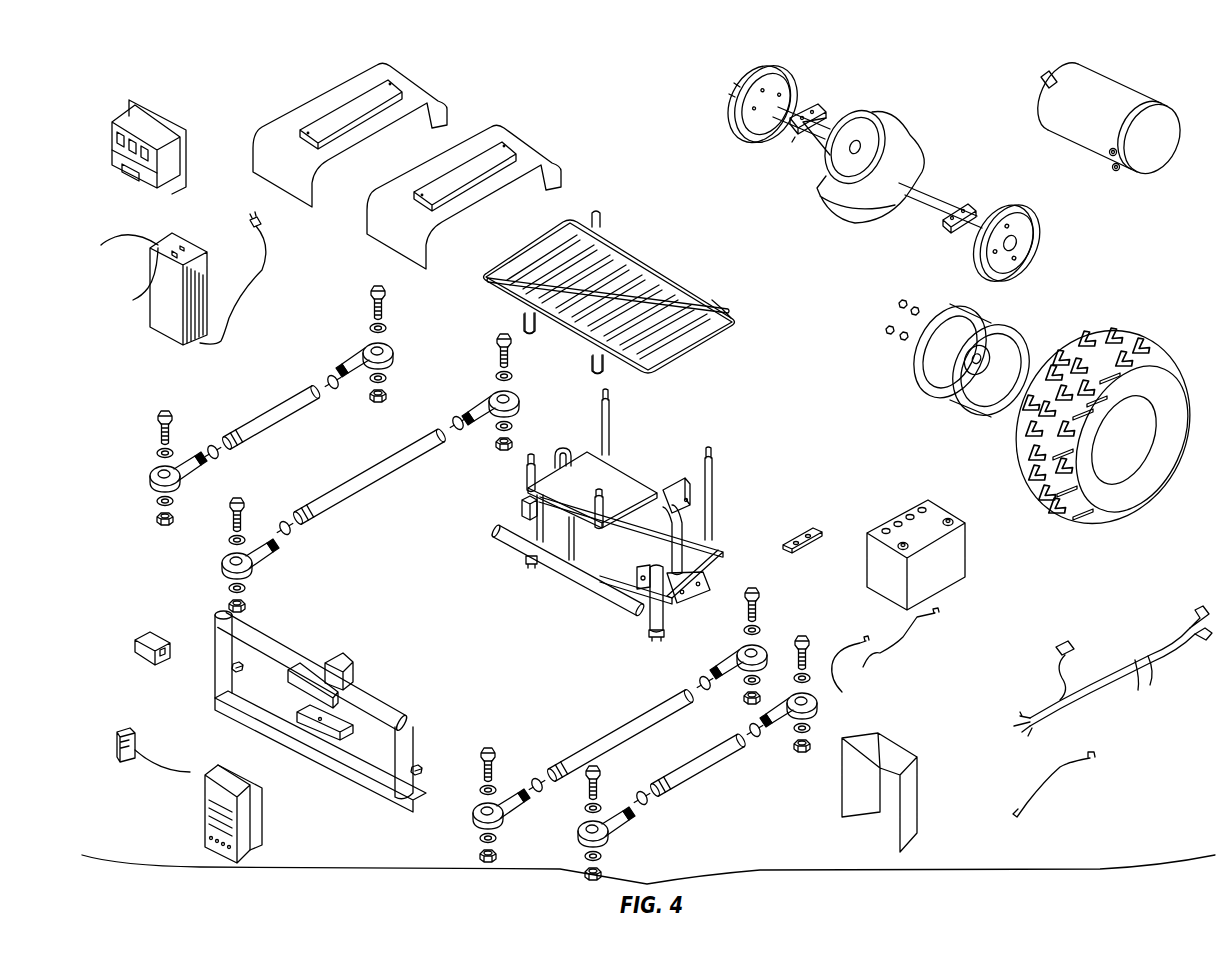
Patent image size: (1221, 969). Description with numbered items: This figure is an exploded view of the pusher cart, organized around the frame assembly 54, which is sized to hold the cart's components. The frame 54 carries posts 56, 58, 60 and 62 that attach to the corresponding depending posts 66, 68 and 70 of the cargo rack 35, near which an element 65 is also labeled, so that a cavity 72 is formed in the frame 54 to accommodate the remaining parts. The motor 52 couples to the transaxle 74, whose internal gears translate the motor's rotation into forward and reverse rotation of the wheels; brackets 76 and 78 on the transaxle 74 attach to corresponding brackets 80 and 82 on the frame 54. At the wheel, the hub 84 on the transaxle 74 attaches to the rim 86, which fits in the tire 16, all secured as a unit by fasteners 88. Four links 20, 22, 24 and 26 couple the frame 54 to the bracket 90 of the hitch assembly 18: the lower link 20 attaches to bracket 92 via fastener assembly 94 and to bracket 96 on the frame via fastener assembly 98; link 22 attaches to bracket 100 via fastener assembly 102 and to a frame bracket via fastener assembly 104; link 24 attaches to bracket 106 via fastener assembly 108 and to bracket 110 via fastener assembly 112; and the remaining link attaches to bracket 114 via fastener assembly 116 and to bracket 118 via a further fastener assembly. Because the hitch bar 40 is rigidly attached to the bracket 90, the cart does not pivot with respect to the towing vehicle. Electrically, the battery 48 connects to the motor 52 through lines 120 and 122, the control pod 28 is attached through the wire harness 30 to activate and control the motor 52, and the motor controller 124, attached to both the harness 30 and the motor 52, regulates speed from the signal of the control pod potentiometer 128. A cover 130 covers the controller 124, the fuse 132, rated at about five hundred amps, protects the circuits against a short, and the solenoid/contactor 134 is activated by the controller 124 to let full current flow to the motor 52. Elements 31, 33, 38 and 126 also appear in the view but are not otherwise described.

The tire 16 is at (1108, 324).
The hitch assembly 18 is at (367, 818).
The lower link 20 is at (360, 473).
The link 22 is at (277, 403).
The link 24 is at (702, 773).
The link 26 is at (635, 714).
The control pod 28 is at (152, 112).
The wire harness 30 is at (1122, 675).
The cover 31 is at (426, 93).
The cover 33 is at (524, 140).
The cargo rack 35 is at (608, 240).
The frame post 38 is at (213, 657).
The hitch bar 40 is at (302, 705).
The battery 48 is at (957, 585).
The motor 52 is at (1062, 150).
The frame assembly 54 is at (702, 408).
The post 56 is at (612, 432).
The post 58 is at (717, 469).
The post 60 is at (527, 467).
The post 62 is at (604, 517).
The cross bar 65 is at (608, 243).
The depending post 66 is at (712, 300).
The depending post 68 is at (529, 332).
The depending post 70 is at (592, 364).
The cavity 72 is at (690, 492).
The transaxle 74 is at (812, 152).
The bracket 76 is at (810, 105).
The bracket 78 is at (967, 196).
The bracket 80 is at (517, 512).
The bracket 82 is at (687, 603).
The hub 84 is at (1018, 207).
The rim 86 is at (983, 313).
The fasteners 88 is at (918, 290).
The bracket 90 is at (383, 708).
The bracket 92 is at (243, 662).
The fastener assembly 94 is at (212, 549).
The bracket 96 is at (527, 562).
The fastener assembly 98 is at (480, 383).
The bracket 100 is at (310, 655).
The fastener assembly 102 is at (142, 481).
The fastener assembly 104 is at (398, 311).
The bracket 106 is at (417, 767).
The fastener assembly 108 is at (470, 841).
The bracket 110 is at (650, 637).
The fastener assembly 112 is at (767, 612).
The bracket 114 is at (360, 677).
The fastener assembly 116 is at (573, 830).
The bracket 118 is at (612, 585).
The line 120 is at (814, 660).
The line 122 is at (1028, 793).
The motor controller 124 is at (265, 804).
The charger 126 is at (213, 275).
The control pod potentiometer 128 is at (137, 737).
The cover 130 is at (900, 743).
The fuse 132 is at (813, 523).
The solenoid/contactor 134 is at (150, 630).